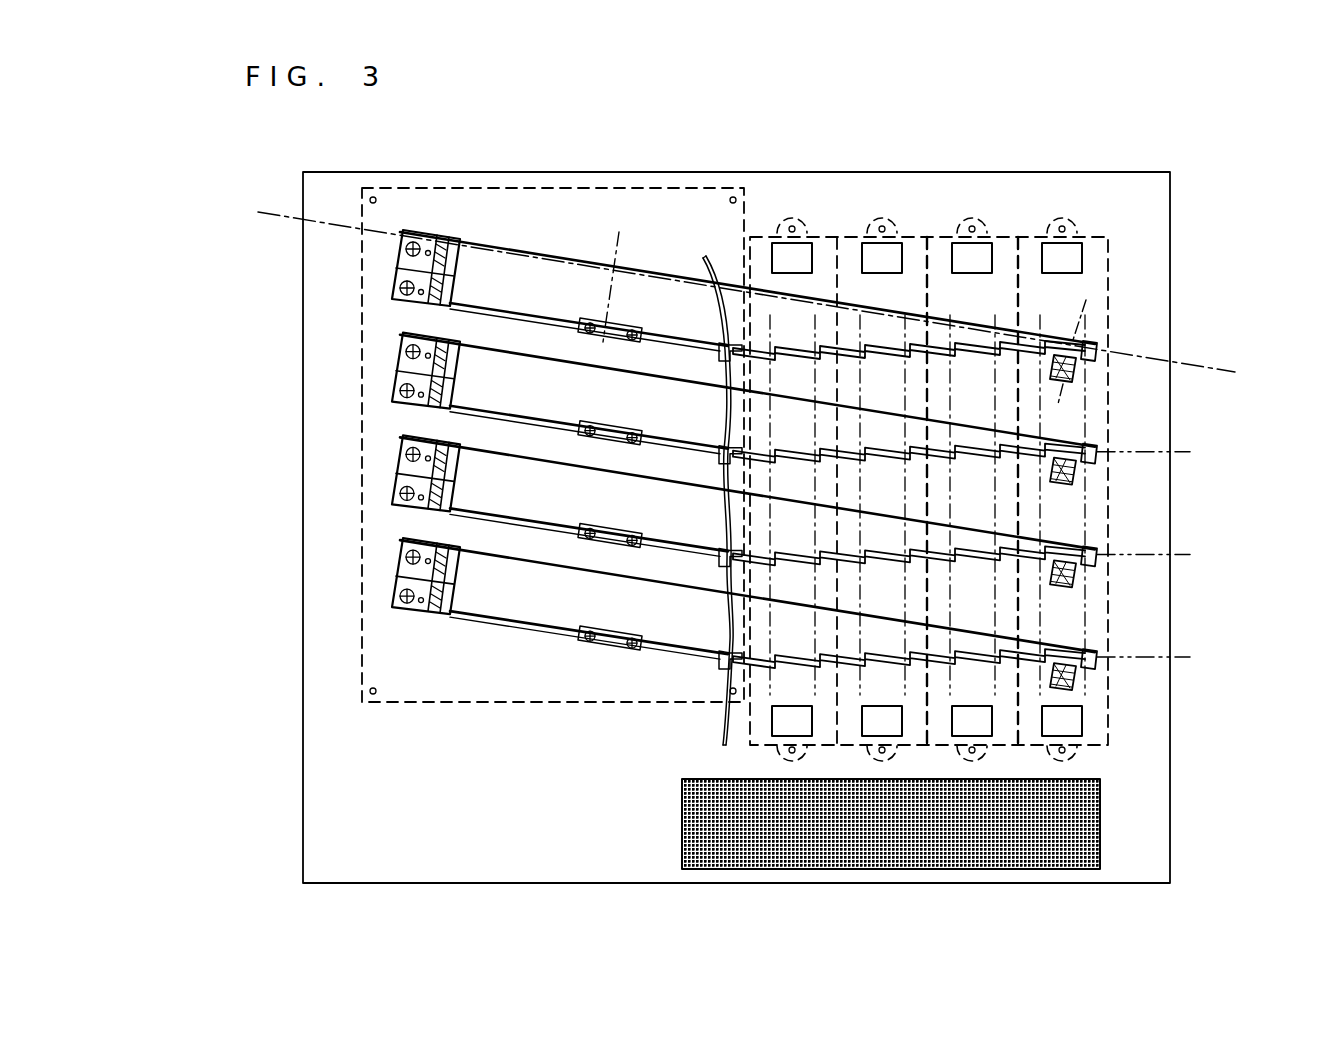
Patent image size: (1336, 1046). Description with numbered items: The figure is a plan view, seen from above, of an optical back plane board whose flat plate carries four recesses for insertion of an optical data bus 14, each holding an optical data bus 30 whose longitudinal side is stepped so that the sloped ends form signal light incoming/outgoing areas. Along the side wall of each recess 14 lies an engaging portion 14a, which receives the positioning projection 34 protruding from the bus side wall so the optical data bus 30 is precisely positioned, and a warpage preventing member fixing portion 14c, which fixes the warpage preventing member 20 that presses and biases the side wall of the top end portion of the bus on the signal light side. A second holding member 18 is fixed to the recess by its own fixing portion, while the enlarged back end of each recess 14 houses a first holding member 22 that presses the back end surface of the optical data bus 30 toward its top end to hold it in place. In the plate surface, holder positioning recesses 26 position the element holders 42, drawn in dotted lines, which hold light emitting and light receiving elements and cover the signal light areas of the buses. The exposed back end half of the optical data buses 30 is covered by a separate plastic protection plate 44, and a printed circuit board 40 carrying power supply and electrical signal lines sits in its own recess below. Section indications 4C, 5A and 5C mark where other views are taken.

The recess for insertion of an optical data bus 14 is at (470, 306).
The engaging portion 14a is at (719, 356).
The warpage preventing member fixing portion 14c is at (1075, 380).
The second holding member 18 is at (590, 337).
The warpage preventing member 20 is at (1094, 354).
The first holding member 22 is at (400, 254).
The holder positioning recess 26 is at (1044, 258).
The optical data bus 30 is at (397, 271).
The positioning projection 34 is at (720, 500).
The printed circuit board 40 is at (1094, 824).
The element holder 42 is at (1087, 232).
The protection plate 44 is at (557, 185).
The section line 4C is at (749, 289).
The section line 5A is at (616, 287).
The section line 5C is at (1076, 353).